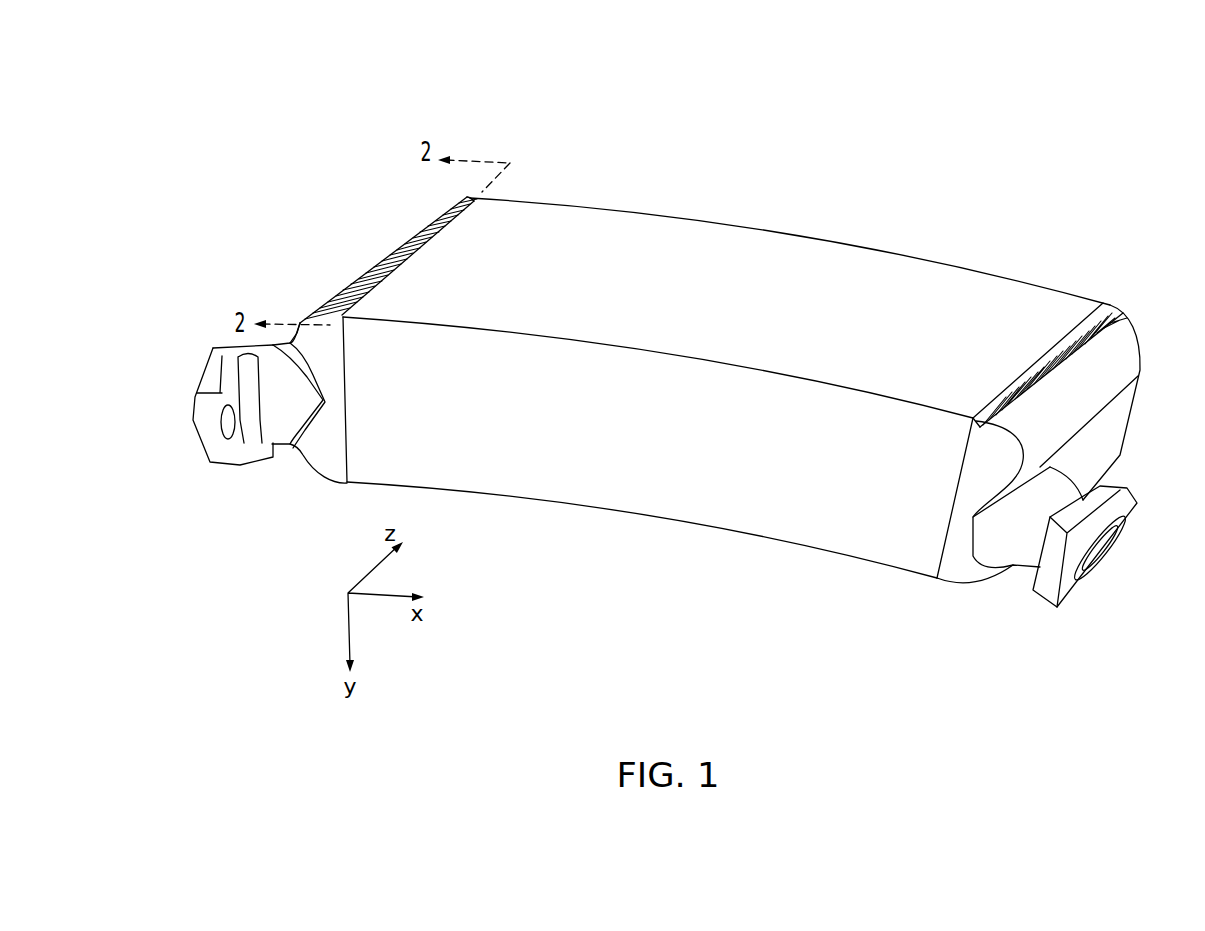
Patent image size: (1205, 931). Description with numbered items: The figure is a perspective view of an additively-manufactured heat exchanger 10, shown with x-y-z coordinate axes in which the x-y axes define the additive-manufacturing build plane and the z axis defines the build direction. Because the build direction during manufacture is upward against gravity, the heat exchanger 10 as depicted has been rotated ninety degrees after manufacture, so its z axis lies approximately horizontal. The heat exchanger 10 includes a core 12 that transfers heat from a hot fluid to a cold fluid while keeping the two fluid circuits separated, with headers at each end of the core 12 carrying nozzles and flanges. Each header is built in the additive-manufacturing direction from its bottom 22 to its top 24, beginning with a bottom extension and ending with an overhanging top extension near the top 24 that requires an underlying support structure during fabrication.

The heat exchanger 10 is at (333, 110).
The core 12 is at (727, 220).
The bottom 22 is at (332, 494).
The top 24 is at (506, 187).